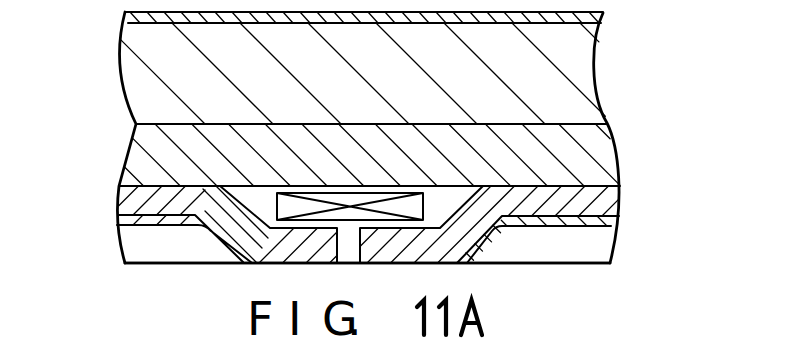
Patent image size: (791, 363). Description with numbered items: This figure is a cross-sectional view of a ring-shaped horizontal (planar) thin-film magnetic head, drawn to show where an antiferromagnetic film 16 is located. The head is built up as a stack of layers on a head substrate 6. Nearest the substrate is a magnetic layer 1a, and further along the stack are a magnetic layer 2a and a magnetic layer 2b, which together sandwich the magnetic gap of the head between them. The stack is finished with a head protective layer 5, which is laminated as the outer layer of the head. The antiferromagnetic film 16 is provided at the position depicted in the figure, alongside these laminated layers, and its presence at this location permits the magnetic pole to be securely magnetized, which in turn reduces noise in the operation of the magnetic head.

The antiferromagnetic film 16 is at (603, 15).
The head substrate 6 is at (582, 68).
The magnetic layer 1a is at (600, 155).
The magnetic layer 2b is at (608, 198).
The magnetic layer 2a is at (128, 203).
The head protective layer 5 is at (562, 248).